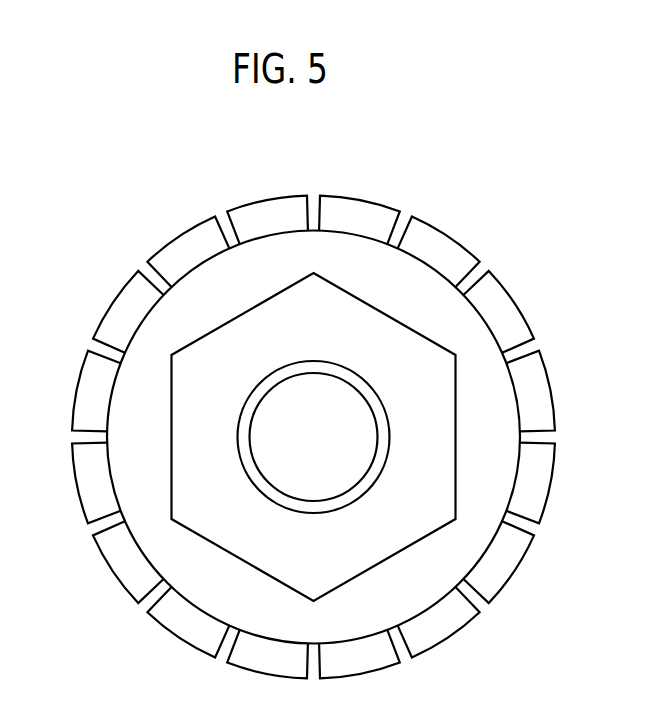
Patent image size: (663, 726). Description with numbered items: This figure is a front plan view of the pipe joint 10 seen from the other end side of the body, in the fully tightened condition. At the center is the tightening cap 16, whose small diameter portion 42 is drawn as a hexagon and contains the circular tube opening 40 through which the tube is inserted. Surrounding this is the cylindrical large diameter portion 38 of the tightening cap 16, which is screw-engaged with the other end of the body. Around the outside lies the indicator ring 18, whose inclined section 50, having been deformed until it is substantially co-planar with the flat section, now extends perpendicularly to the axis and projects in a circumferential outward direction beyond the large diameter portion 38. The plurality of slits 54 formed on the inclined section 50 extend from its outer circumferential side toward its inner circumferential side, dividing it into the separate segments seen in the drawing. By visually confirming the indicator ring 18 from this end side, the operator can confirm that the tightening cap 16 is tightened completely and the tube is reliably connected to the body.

The pipe joint 10 is at (203, 178).
The tightening cap 16 is at (118, 327).
The indicator ring 18 is at (563, 365).
The large diameter portion 38 is at (205, 597).
The tube opening 40 is at (315, 376).
The small diameter portion 42 is at (267, 315).
The inclined section 50 is at (533, 492).
The slits 54 is at (512, 525).